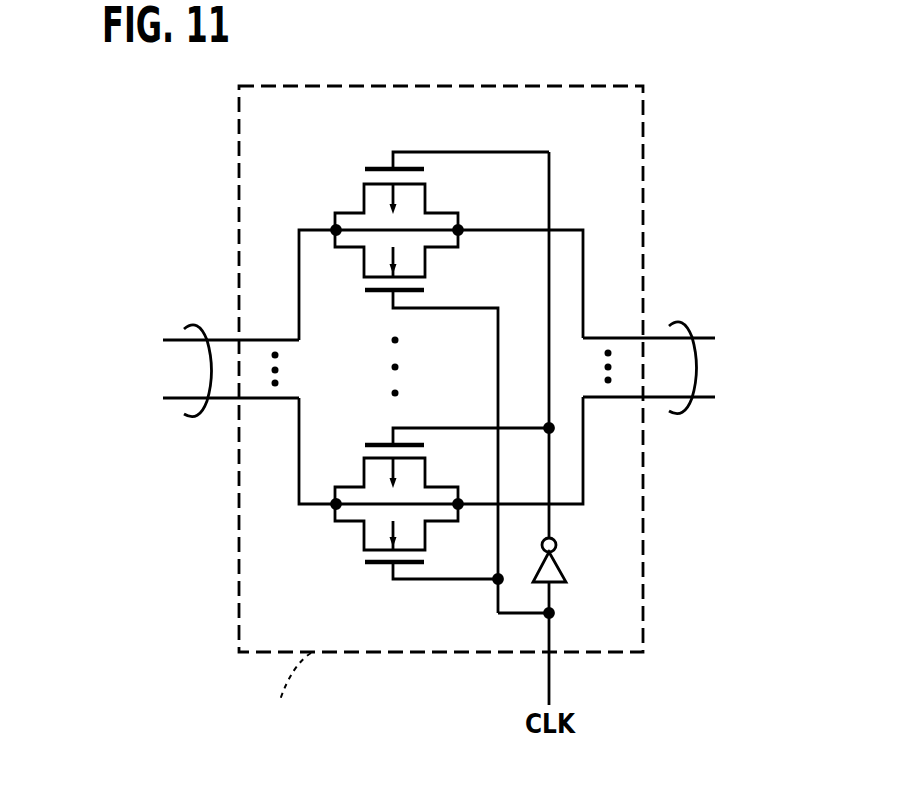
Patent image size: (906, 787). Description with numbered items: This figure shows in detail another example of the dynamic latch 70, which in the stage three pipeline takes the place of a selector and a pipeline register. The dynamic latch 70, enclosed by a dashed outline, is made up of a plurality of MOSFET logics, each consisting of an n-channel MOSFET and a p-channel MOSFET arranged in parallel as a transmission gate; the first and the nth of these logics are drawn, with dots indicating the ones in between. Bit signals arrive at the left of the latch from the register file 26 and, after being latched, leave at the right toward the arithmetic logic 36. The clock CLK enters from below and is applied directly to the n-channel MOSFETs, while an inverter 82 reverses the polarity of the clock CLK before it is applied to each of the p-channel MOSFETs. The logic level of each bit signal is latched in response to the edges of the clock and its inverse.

The dynamic latch 70 is at (461, 653).
The inverter 82 is at (562, 566).
The register file 26 is at (161, 371).
The arithmetic logic 36 is at (703, 368).